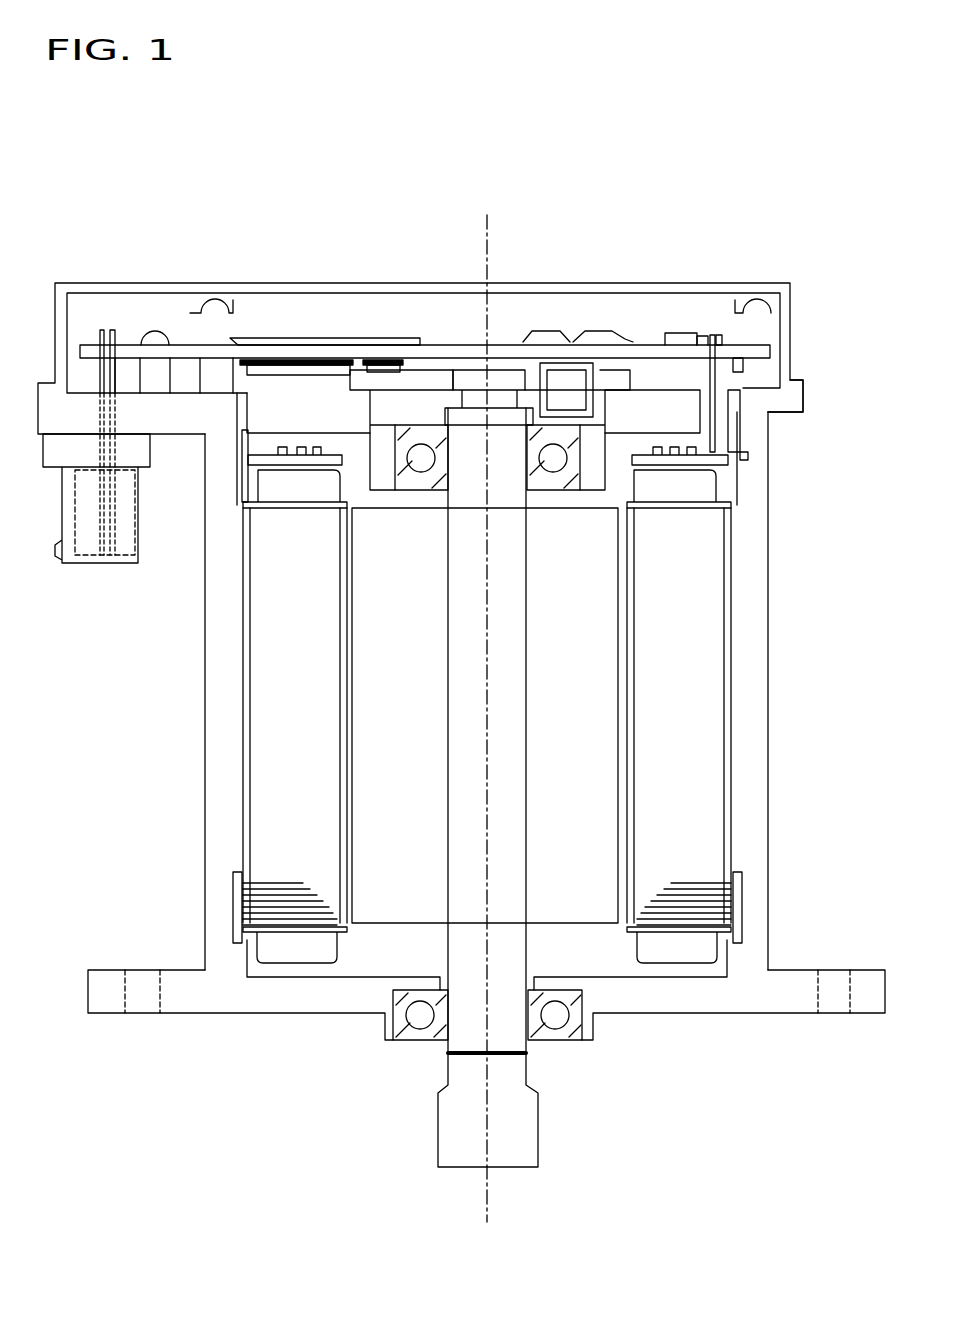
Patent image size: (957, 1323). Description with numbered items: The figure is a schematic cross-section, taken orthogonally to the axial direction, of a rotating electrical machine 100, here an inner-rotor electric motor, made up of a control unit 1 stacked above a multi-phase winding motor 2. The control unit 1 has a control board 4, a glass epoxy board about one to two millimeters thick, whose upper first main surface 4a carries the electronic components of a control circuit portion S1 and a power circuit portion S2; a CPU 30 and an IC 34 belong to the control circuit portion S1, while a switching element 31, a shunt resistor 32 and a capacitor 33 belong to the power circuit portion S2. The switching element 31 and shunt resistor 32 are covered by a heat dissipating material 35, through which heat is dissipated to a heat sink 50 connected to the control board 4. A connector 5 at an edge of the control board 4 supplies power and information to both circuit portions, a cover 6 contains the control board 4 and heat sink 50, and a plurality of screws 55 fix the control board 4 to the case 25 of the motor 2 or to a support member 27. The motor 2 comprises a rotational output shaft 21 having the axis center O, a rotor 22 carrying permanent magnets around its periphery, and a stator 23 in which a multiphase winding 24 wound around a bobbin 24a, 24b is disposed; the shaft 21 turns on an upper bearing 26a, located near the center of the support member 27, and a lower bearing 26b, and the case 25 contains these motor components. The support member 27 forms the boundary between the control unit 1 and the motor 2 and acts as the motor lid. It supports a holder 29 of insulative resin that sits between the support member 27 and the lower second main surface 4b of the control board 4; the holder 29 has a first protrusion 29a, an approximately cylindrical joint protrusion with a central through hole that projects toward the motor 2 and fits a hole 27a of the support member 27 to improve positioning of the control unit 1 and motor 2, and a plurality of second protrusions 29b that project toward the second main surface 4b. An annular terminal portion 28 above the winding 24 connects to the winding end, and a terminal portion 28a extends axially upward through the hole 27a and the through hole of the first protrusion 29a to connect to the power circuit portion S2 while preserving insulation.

The rotating electrical machine 100 is at (788, 165).
The control unit 1 is at (613, 200).
The multi-phase winding motor 2 is at (812, 768).
The control board 4 is at (512, 345).
The first main surface 4a is at (185, 350).
The second main surface 4b is at (700, 345).
The connector 5 is at (66, 565).
The cover 6 is at (212, 345).
The rotational (output) shaft 21 is at (497, 1050).
The rotor 22 is at (375, 722).
The stator 23 is at (715, 712).
The multiphase winding 24 is at (705, 500).
The bobbin 24a is at (250, 497).
The bobbin 24b is at (240, 932).
The case 25 is at (765, 835).
The upper bearing 26a is at (422, 452).
The lower bearing 26b is at (416, 1016).
The support member 27 is at (735, 436).
The hole 27a is at (752, 455).
The annular terminal portion 28 is at (725, 470).
The terminal portion 28a is at (740, 362).
The holder 29 is at (745, 352).
The first protrusion (joint protrusion) 29a is at (736, 410).
The second protrusions 29b is at (735, 335).
The CPU 30 is at (275, 356).
The switching element 31 is at (668, 345).
The shunt resistor 32 is at (702, 350).
The capacitor 33 is at (553, 385).
The IC 34 is at (376, 358).
The heat dissipating material 35 is at (626, 345).
The heat sink 50 is at (322, 340).
The screws 55 is at (157, 340).
The control circuit portion S1 is at (300, 325).
The power circuit portion S2 is at (610, 305).
The axis center O is at (487, 1215).